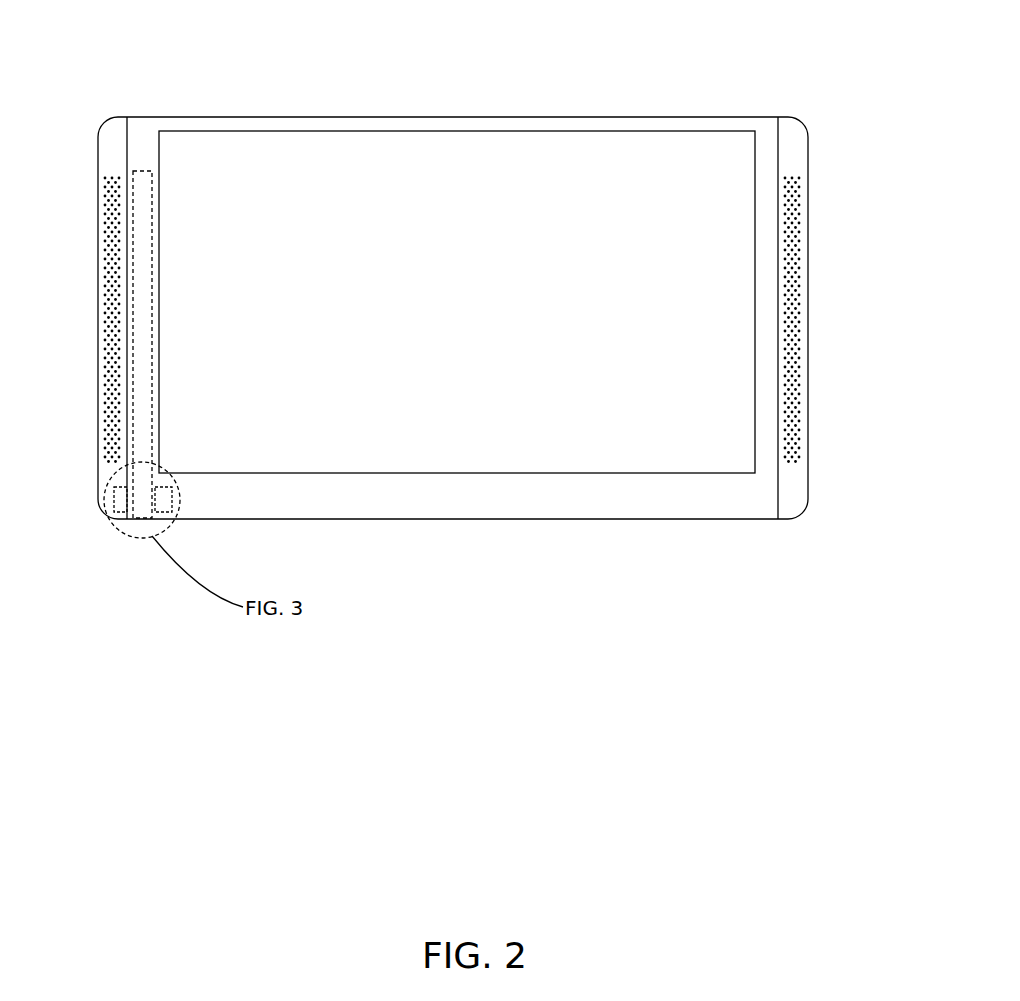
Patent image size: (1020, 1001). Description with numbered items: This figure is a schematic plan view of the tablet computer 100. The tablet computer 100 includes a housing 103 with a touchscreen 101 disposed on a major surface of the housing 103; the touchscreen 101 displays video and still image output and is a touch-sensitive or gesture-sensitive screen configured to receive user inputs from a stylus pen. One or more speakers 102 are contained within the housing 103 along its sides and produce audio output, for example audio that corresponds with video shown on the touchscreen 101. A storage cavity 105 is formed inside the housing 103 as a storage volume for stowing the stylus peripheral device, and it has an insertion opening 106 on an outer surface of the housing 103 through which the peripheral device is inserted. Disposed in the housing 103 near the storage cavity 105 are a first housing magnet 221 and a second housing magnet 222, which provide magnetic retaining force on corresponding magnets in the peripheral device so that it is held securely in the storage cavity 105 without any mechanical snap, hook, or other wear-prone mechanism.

The tablet computer 100 is at (453, 302).
The touchscreen 101 is at (490, 326).
The speakers 102 is at (453, 324).
The housing 103 is at (456, 117).
The storage cavity 105 is at (143, 171).
The insertion opening 106 is at (140, 538).
The first housing magnet 221 is at (114, 500).
The second housing magnet 222 is at (172, 500).